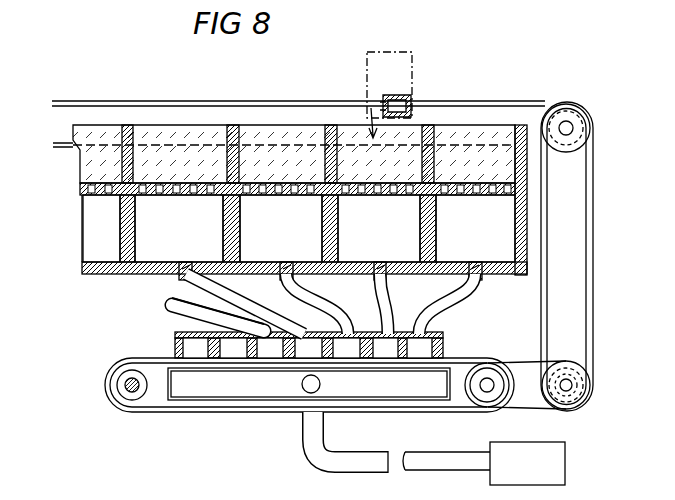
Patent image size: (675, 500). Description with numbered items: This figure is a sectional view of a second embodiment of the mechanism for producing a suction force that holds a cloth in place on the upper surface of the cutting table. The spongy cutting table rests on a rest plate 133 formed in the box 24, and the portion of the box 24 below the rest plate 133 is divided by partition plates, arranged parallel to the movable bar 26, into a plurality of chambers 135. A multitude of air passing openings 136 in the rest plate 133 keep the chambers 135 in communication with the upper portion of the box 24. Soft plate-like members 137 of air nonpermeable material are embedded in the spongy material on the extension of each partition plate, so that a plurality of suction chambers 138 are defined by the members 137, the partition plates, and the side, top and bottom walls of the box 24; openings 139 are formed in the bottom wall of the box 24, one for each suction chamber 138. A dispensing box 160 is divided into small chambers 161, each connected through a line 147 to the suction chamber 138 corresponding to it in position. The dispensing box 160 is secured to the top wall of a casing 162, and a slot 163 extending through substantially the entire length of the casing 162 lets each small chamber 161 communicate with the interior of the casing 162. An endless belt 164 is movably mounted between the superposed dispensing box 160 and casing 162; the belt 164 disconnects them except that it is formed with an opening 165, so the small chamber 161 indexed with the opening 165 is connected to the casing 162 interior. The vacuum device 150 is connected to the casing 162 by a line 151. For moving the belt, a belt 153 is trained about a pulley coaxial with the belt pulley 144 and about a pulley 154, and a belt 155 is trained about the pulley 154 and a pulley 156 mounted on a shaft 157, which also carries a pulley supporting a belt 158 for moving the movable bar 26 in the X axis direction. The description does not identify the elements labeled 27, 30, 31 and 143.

The box 24 is at (527, 219).
The movable bar 26 is at (410, 110).
The clamp member 27 is at (402, 97).
The control unit 30 is at (385, 52).
The feed nozzle 31 is at (370, 122).
The rest plate 133 is at (115, 182).
The chambers 135 is at (88, 245).
The air passing openings 136 is at (90, 197).
The soft plate-like members 137 is at (128, 125).
The suction chambers 138 is at (88, 125).
The openings 139 is at (205, 280).
The idler roller 143 is at (120, 387).
The belt pulley 144 is at (500, 366).
The line 147 is at (178, 291).
The vacuum device 150 is at (565, 462).
The line 151 is at (465, 470).
The belt 153 is at (510, 407).
The pulley 154 is at (566, 370).
The belt 155 is at (593, 233).
The pulley 156 is at (582, 140).
The shaft 157 is at (566, 121).
The belt 158 is at (180, 103).
The dispensing box 160 is at (172, 318).
The small chambers 161 is at (183, 345).
The casing 162 is at (170, 388).
The slot 163 is at (222, 372).
The endless belt 164 is at (172, 337).
The opening 165 is at (388, 368).